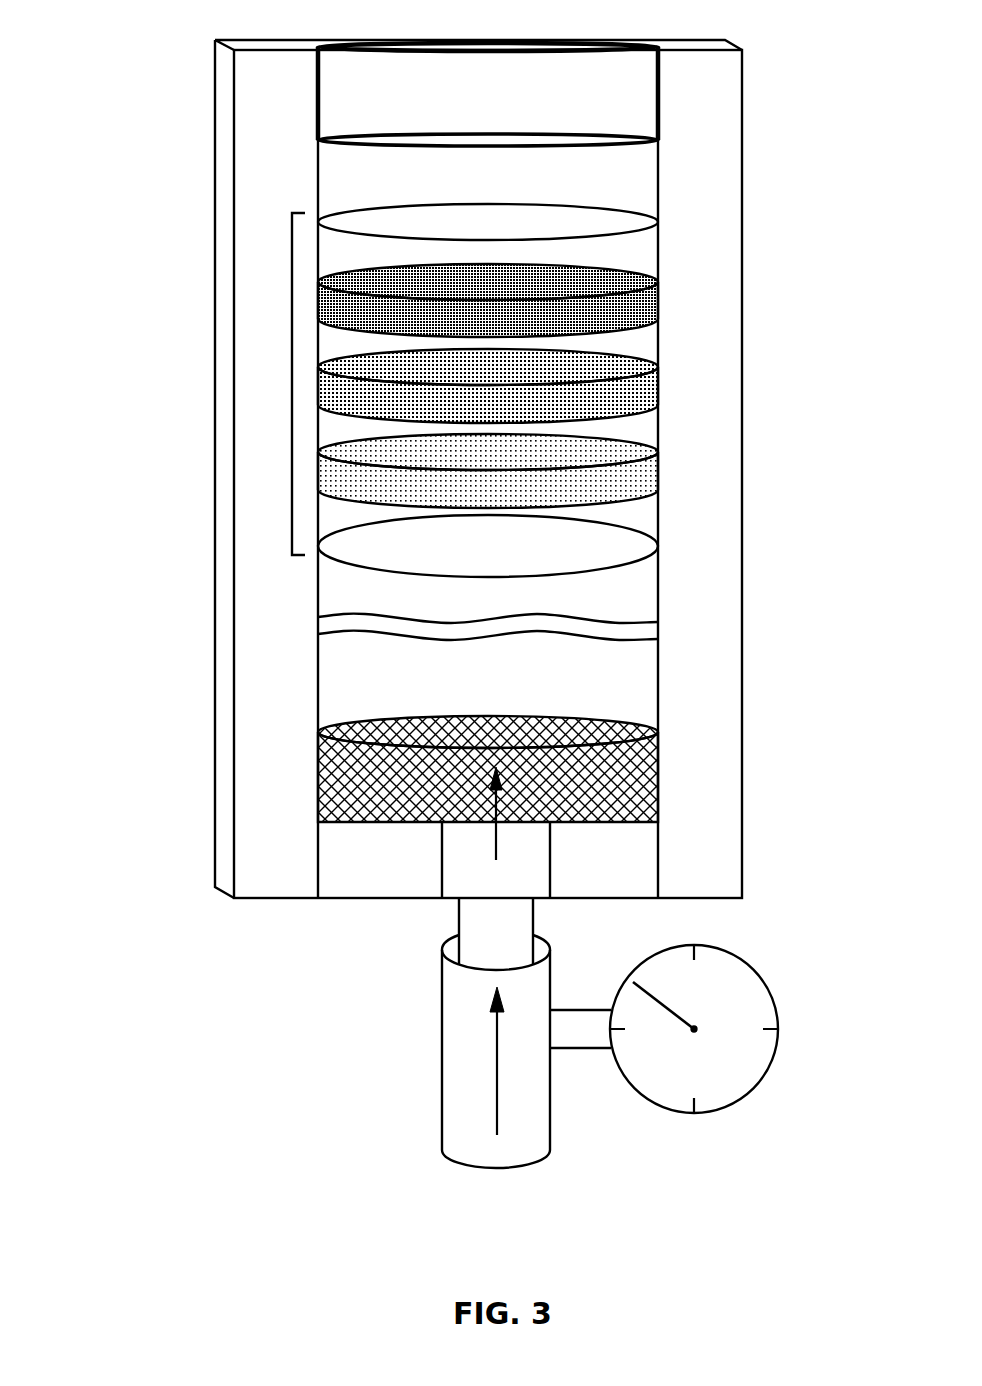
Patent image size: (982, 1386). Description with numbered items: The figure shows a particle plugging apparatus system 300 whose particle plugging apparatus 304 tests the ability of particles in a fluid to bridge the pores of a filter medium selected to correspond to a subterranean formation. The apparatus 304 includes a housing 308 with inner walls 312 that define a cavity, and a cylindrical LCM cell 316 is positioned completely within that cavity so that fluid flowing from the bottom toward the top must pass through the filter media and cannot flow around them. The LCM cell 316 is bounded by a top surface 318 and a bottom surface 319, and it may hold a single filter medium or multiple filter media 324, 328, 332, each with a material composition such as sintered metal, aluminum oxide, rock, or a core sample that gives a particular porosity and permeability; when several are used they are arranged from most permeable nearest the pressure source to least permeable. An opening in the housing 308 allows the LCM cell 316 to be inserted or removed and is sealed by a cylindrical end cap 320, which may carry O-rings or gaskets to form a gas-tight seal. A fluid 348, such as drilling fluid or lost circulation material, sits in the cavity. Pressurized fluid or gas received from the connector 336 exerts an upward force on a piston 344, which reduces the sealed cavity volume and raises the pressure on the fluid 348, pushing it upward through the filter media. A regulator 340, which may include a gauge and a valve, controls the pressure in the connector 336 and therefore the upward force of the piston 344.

The particle plugging apparatus system 300 is at (170, 1318).
The particle plugging apparatus 304 is at (762, 245).
The housing 308 is at (248, 43).
The inner walls 312 is at (660, 172).
The LCM cell 316 is at (292, 305).
The top surface 318 is at (440, 203).
The bottom surface 319 is at (556, 573).
The end cap 320 is at (480, 43).
The filter medium 324 is at (645, 438).
The filter medium 328 is at (650, 350).
The filter medium 332 is at (652, 268).
The connector 336 is at (551, 977).
The regulator 340 is at (765, 981).
The piston 344 is at (660, 785).
The fluid 348 is at (660, 623).